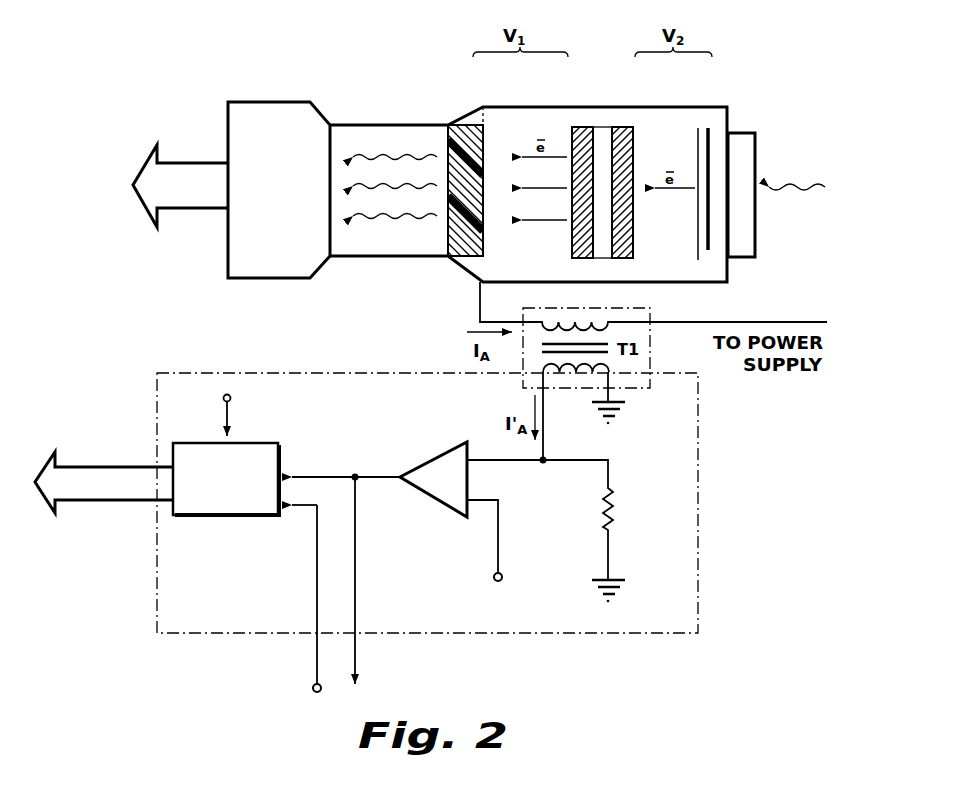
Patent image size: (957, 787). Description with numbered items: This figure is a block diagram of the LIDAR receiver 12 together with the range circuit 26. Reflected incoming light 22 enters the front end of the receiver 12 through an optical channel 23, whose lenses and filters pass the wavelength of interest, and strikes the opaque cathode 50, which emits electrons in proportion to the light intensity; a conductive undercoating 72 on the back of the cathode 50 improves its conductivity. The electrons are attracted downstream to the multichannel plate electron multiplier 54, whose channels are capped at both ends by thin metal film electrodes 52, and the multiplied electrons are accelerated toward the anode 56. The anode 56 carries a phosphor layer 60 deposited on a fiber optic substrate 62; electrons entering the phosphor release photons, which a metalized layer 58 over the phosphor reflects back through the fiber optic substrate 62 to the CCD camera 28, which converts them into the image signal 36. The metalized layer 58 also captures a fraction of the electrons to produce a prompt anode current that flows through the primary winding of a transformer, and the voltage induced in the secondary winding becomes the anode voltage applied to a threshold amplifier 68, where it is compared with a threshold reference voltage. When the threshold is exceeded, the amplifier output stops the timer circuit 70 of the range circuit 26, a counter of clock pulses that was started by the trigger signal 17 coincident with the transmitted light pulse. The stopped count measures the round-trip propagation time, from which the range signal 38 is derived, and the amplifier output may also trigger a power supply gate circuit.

The LIDAR receiver 12 is at (727, 108).
The trigger signal 17 is at (317, 593).
The reflected light pulse 22 is at (800, 190).
The optical channel 23 is at (755, 136).
The range circuit 26 is at (449, 537).
The CCD camera 28 is at (286, 102).
The image signal 36 is at (198, 163).
The range signal 38 is at (102, 500).
The cathode 50 is at (708, 250).
The microchannel plate electrodes 52 is at (578, 128).
The multichannel plate electron multiplier 54 is at (601, 126).
The anode 56 is at (483, 98).
The metalized layer 58 is at (488, 232).
The phosphor layer 60 is at (448, 236).
The fiber optic substrate 62 is at (387, 124).
The threshold amplifier 68 is at (452, 425).
The timer circuit 70 is at (260, 443).
The undercoating 72 is at (698, 260).